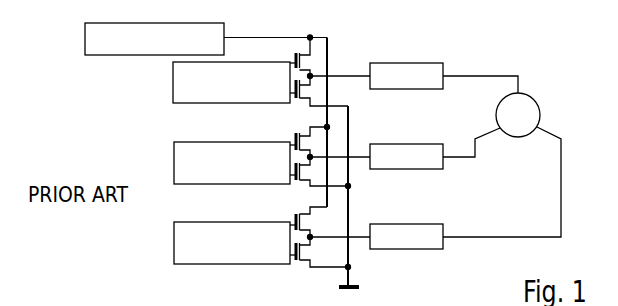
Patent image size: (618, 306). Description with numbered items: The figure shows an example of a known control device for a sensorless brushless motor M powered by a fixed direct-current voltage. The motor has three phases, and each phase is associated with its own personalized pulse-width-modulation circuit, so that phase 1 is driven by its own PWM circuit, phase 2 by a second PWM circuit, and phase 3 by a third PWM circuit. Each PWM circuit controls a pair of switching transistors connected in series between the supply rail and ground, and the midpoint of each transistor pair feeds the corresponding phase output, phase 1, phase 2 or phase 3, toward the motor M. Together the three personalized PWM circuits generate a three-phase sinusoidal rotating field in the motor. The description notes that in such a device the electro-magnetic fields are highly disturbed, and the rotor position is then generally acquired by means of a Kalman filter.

The phase 1 half-bridge leg (PWM #1 driver, transistor pair, Ph 1 output) 1 is at (345, 72).
The phase 2 half-bridge leg (PWM #2 driver, transistor pair, Ph 2 output) 2 is at (337, 157).
The phase 3 half-bridge leg (PWM #3 driver, transistor pair, Ph 3 output) 3 is at (367, 198).